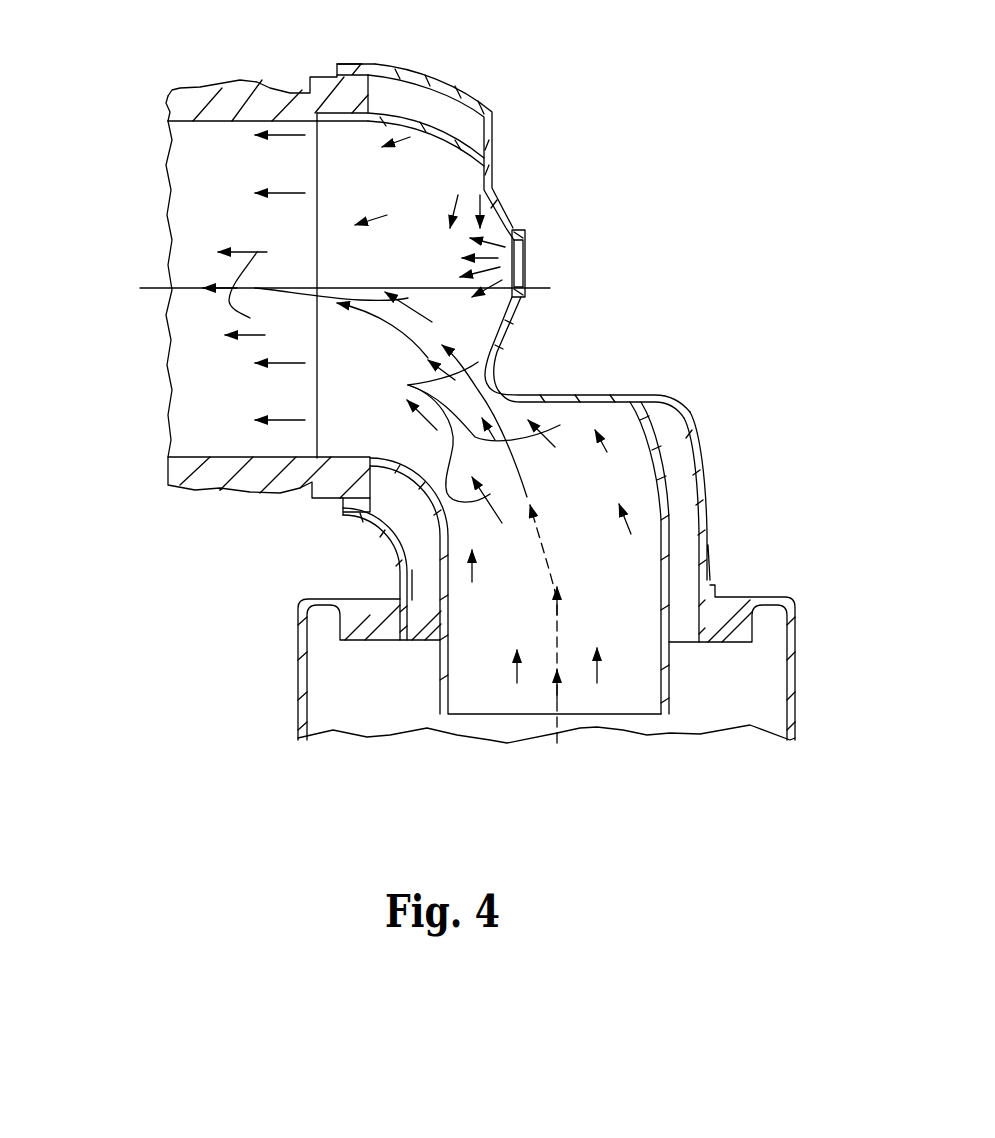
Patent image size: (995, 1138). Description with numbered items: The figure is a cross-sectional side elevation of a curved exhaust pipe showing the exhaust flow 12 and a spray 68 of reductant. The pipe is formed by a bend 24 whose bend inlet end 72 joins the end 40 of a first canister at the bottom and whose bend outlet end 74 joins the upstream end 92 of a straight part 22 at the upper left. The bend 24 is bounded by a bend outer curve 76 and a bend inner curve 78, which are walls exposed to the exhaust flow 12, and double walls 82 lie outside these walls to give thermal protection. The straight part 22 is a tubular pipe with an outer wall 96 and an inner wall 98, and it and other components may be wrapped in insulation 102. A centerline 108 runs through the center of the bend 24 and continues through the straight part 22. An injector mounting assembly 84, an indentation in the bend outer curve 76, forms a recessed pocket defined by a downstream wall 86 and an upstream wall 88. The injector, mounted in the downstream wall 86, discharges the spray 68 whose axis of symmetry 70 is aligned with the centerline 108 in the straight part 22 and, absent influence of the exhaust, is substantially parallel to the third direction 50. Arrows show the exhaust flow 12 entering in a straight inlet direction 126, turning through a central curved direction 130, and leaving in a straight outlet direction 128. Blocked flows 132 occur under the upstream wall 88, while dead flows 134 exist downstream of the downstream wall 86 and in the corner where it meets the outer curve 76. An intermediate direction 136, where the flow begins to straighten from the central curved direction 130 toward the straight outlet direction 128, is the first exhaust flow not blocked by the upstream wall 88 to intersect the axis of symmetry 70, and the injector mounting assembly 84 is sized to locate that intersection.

The exhaust flow 12 is at (228, 335).
The straight part 22 is at (203, 87).
The bend 24 is at (700, 452).
The end of first canister 40 is at (298, 693).
The third direction 50 is at (150, 247).
The spray 68 is at (470, 260).
The axis of symmetry 70 is at (257, 288).
The bend inlet end 72 is at (478, 710).
The bend outlet end 74 is at (297, 440).
The bend outer curve 76 is at (450, 138).
The bend inner curve 78 is at (413, 508).
The double walls 82 is at (384, 72).
The injector mounting assembly 84 is at (618, 206).
The downstream wall 86 is at (478, 183).
The upstream wall 88 is at (604, 392).
The upstream end 92 is at (205, 492).
The outer wall 96 is at (209, 124).
The inner wall 98 is at (193, 452).
The insulation 102 is at (222, 490).
The centerline 108 is at (185, 288).
The straight inlet direction 126 is at (590, 672).
The straight outlet direction 128 is at (248, 334).
The central curved direction 130 is at (408, 385).
The blocked flows 132 is at (627, 527).
The dead flows 134 is at (407, 205).
The intermediate direction 136 is at (407, 298).